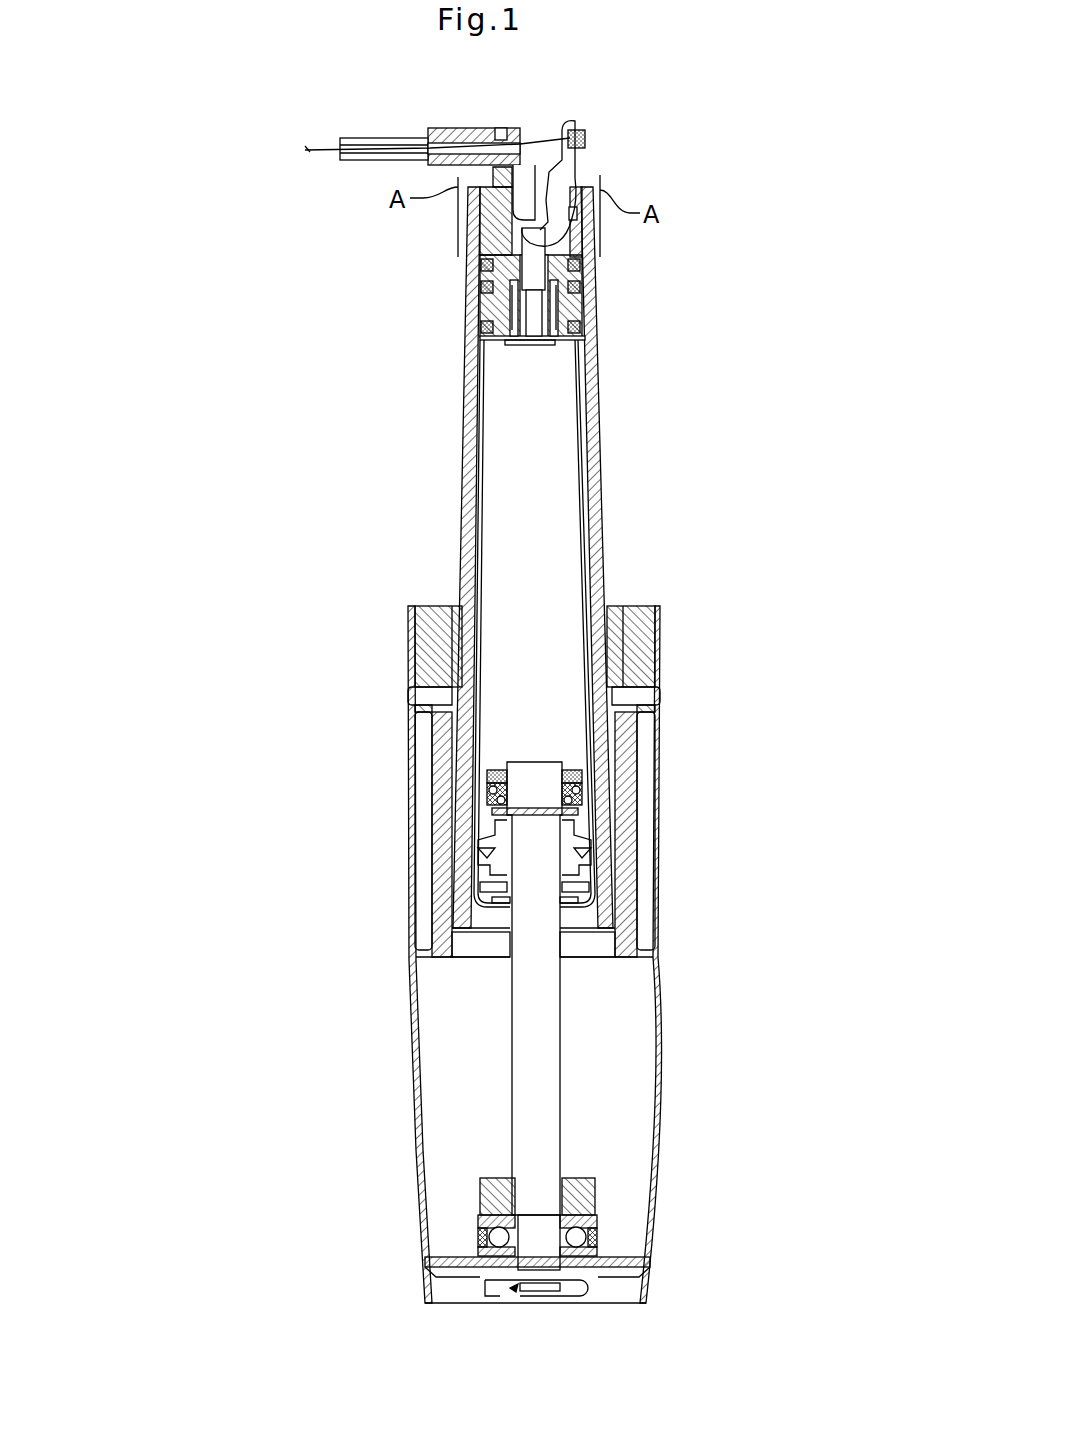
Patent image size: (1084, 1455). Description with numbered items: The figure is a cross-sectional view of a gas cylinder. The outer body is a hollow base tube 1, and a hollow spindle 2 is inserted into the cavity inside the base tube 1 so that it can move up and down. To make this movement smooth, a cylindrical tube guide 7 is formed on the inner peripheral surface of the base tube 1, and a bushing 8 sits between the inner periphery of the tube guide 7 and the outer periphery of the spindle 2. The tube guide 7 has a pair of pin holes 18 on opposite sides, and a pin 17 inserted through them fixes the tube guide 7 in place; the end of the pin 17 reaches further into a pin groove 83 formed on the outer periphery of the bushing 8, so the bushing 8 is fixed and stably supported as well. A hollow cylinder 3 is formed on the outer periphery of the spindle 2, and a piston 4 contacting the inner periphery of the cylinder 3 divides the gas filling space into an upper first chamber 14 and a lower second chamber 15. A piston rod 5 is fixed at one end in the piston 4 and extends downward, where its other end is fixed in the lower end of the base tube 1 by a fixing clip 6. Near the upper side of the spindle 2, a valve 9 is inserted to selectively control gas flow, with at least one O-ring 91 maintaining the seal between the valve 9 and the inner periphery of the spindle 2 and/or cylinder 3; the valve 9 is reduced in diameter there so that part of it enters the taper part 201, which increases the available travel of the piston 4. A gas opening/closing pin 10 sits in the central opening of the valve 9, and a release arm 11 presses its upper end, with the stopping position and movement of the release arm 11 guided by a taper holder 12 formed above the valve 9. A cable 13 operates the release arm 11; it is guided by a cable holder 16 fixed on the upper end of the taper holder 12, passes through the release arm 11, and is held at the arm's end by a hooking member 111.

The base tube 1 is at (658, 968).
The spindle 2 is at (602, 487).
The cylinder 3 is at (585, 397).
The piston 4 is at (600, 797).
The piston rod 5 is at (527, 1048).
The fixing clip 6 is at (595, 1292).
The tube guide 7 is at (437, 620).
The bushing 8 is at (450, 823).
The valve 9 is at (597, 293).
The gas opening/closing pin 10 is at (533, 255).
The release arm 11 is at (564, 162).
The taper holder 12 is at (493, 232).
The cable 13 is at (305, 150).
The first chamber 14 is at (497, 420).
The second chamber 15 is at (567, 825).
The cable holder 16 is at (390, 137).
The pin 17 is at (648, 693).
The pin holes 18 is at (654, 670).
The pin groove 83 is at (612, 672).
The O-ring 91 is at (485, 287).
The hooking member 111 is at (582, 130).
The taper part 201 is at (495, 225).